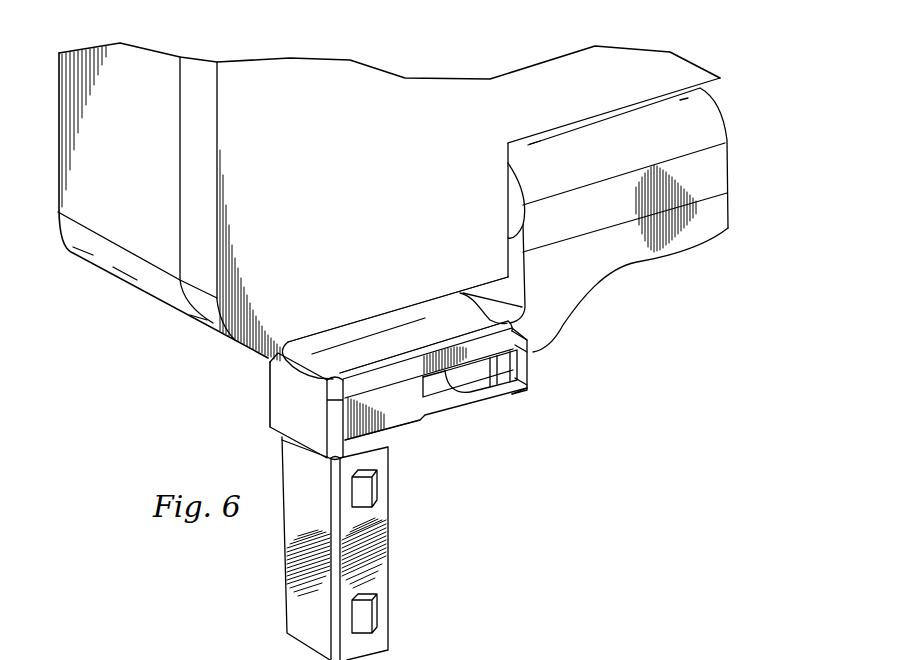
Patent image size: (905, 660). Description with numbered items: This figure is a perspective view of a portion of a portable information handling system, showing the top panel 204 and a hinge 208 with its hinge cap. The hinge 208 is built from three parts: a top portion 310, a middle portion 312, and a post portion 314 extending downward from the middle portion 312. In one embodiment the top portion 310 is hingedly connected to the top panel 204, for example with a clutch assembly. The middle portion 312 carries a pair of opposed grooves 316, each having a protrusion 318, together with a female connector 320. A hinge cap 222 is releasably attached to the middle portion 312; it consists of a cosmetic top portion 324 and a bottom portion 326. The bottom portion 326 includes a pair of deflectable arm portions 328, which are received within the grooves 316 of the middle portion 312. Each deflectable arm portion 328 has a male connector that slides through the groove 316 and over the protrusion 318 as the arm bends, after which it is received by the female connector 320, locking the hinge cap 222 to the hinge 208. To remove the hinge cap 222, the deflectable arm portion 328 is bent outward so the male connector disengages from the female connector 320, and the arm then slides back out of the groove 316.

The top panel 204 is at (305, 76).
The hinge 208 is at (727, 122).
The top portion 310 is at (713, 181).
The middle portion 312 is at (530, 348).
The hinge cap 222 is at (353, 350).
The cosmetic top portion 324 is at (423, 311).
The bottom portion 326 is at (278, 395).
The deflectable arm portion 328 is at (438, 400).
The groove 316 is at (452, 380).
The protrusion 318 is at (507, 387).
The female connector 320 is at (520, 370).
The post portion 314 is at (373, 582).